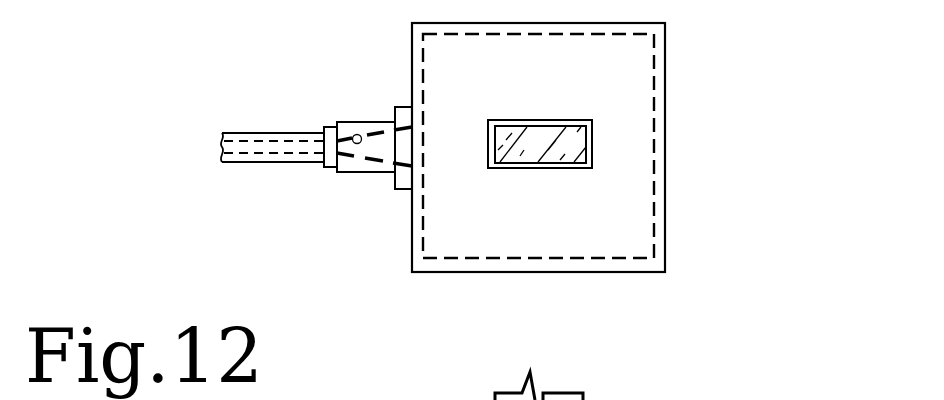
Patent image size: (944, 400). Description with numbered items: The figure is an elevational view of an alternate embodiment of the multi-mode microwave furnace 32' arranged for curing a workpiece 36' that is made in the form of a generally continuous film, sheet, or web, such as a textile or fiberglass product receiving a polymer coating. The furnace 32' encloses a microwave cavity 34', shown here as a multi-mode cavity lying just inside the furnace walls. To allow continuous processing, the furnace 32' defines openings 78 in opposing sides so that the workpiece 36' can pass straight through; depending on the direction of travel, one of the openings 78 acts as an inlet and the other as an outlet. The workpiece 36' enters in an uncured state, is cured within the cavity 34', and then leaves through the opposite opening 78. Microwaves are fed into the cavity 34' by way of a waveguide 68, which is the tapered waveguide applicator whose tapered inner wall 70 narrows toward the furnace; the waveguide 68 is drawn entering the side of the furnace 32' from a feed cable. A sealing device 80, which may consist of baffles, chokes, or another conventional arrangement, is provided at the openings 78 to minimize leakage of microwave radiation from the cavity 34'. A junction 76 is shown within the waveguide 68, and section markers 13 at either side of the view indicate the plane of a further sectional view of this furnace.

The section line 13- 13 is at (198, 149).
The multi-mode microwave furnace 32' is at (601, 147).
The microwave cavity 34' is at (614, 146).
The workpiece 36' is at (540, 108).
The waveguide 68 is at (338, 172).
The tapered inner wall 70 is at (368, 152).
The conductor junction 76 is at (355, 135).
The openings 78 is at (488, 153).
The sealing device 80 is at (555, 167).